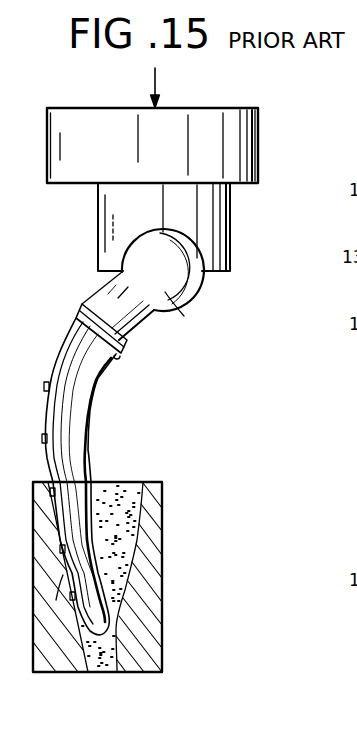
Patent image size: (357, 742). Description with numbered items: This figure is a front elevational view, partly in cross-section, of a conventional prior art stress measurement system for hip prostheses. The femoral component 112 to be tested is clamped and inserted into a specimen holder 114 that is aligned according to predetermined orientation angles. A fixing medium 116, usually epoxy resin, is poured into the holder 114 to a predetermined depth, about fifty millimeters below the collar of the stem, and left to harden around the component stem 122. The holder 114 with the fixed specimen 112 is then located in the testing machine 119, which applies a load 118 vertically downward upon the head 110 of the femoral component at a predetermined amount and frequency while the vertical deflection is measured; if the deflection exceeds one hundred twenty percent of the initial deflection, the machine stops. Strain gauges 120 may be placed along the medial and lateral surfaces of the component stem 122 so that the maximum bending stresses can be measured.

The head 110 is at (167, 296).
The femoral component 112 is at (102, 396).
The specimen holder 114 is at (148, 628).
The fixing medium 116 is at (130, 560).
The load 118 is at (157, 80).
The testing machine 119 is at (259, 137).
The strain gauges 120 is at (42, 438).
The component stem 122 is at (63, 575).